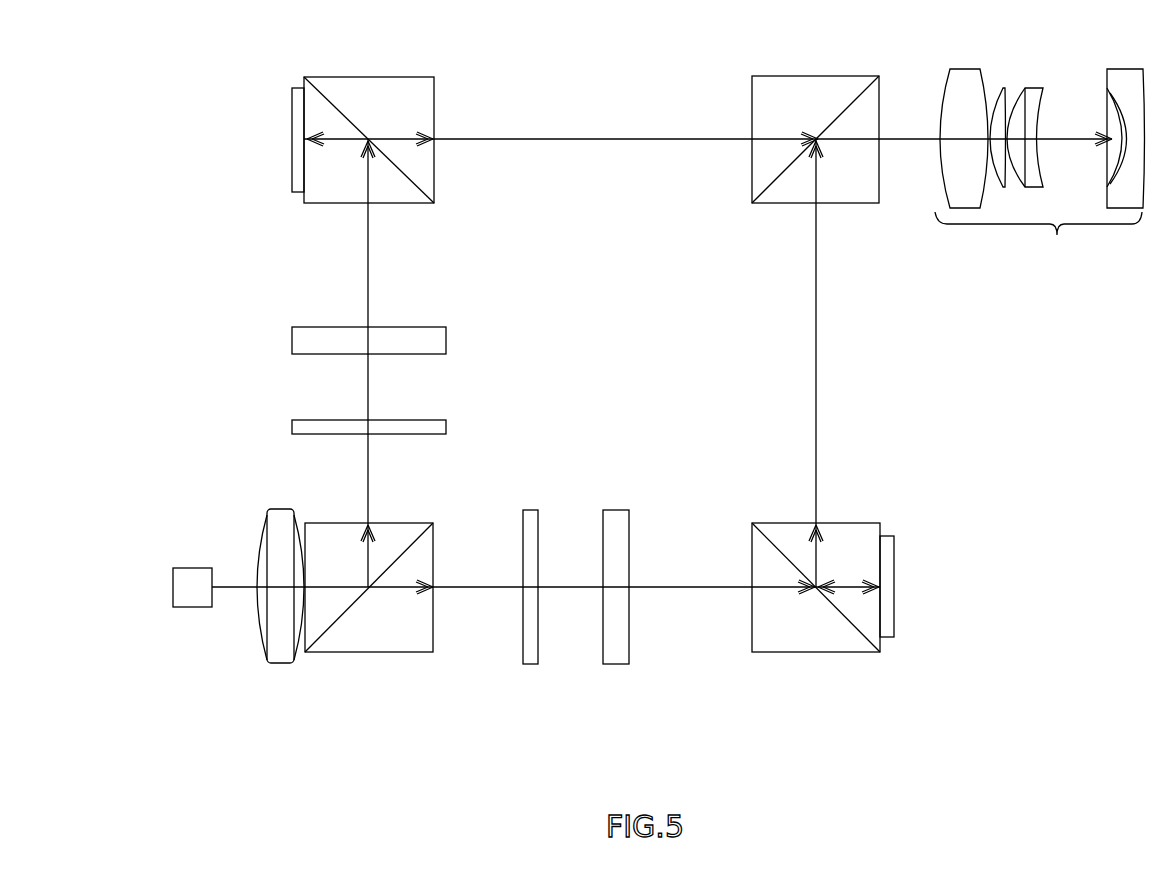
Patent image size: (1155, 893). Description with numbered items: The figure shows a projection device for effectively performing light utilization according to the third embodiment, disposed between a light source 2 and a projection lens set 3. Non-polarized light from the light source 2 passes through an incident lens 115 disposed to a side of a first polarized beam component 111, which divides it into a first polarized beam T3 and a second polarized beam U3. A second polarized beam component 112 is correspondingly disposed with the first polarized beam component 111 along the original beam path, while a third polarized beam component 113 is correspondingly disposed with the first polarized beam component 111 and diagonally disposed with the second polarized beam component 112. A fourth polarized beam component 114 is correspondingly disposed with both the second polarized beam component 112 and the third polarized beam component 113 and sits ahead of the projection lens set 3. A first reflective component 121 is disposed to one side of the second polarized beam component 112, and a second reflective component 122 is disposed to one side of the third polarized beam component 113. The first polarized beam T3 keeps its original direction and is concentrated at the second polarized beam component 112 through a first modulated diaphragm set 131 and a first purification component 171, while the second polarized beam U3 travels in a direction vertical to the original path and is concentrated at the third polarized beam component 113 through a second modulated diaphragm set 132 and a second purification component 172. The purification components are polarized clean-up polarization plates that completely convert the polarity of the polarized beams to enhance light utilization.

The light source 2 is at (191, 582).
The projection lens set 3 is at (1040, 168).
The first polarized beam component 111 is at (376, 629).
The second polarized beam component 112 is at (817, 635).
The third polarized beam component 113 is at (375, 100).
The fourth polarized beam component 114 is at (833, 97).
The incident lens 115 is at (283, 640).
The first reflective component 121 is at (883, 614).
The second reflective component 122 is at (303, 120).
The first modulated diaphragm set 131 is at (530, 643).
The second modulated diaphragm set 132 is at (295, 422).
The first purification component 171 is at (618, 639).
The second purification component 172 is at (317, 338).
The first polarized beam T3 is at (688, 587).
The second polarized beam U3 is at (372, 234).